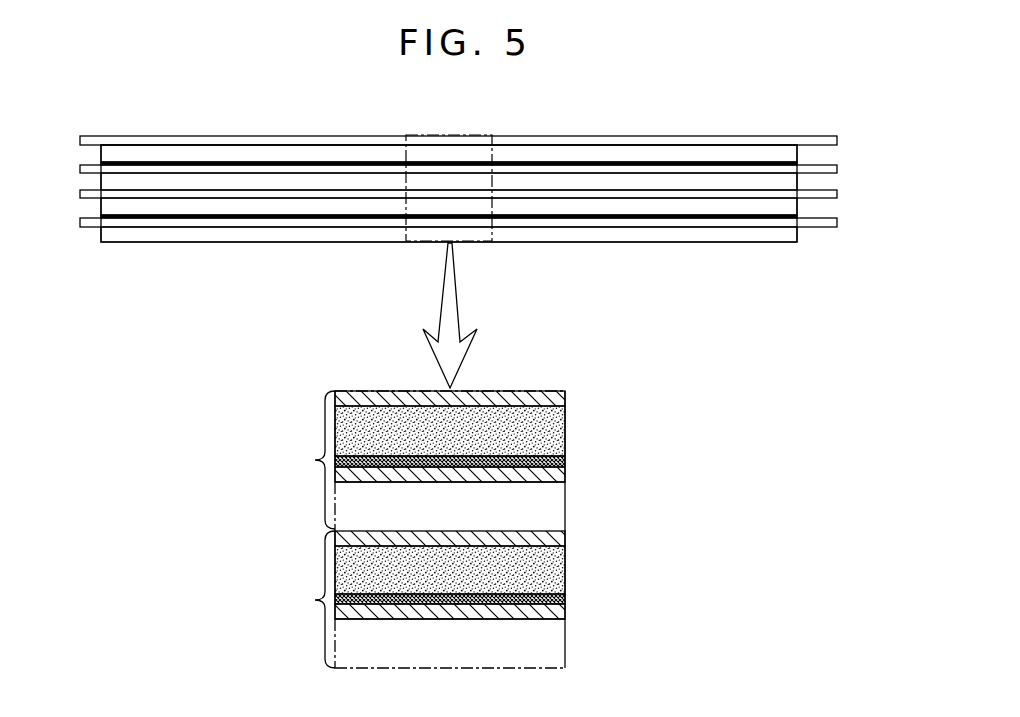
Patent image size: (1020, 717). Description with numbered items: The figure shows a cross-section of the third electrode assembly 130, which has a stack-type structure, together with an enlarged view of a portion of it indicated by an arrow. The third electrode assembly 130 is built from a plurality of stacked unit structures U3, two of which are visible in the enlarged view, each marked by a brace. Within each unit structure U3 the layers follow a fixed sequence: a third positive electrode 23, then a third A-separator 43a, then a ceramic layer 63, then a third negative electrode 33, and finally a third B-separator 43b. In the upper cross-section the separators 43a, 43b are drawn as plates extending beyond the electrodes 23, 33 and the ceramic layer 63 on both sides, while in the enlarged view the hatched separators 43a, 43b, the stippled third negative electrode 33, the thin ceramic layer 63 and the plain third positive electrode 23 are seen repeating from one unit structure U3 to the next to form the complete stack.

The third electrode assembly 130 is at (828, 101).
The third positive electrode 23 is at (108, 182).
The third negative electrode 33 is at (108, 153).
The third A-separator 43a is at (837, 169).
The third B-separator 43b is at (837, 140).
The ceramic layer 63 is at (108, 163).
The unit structure U3 is at (311, 529).